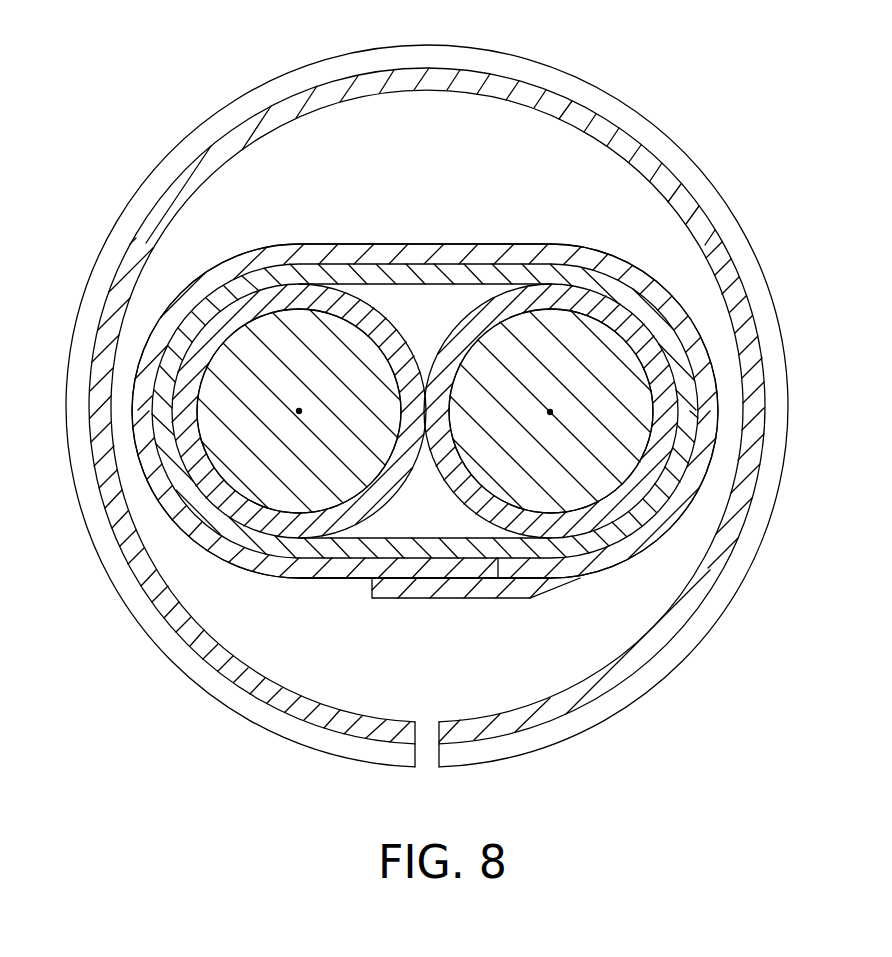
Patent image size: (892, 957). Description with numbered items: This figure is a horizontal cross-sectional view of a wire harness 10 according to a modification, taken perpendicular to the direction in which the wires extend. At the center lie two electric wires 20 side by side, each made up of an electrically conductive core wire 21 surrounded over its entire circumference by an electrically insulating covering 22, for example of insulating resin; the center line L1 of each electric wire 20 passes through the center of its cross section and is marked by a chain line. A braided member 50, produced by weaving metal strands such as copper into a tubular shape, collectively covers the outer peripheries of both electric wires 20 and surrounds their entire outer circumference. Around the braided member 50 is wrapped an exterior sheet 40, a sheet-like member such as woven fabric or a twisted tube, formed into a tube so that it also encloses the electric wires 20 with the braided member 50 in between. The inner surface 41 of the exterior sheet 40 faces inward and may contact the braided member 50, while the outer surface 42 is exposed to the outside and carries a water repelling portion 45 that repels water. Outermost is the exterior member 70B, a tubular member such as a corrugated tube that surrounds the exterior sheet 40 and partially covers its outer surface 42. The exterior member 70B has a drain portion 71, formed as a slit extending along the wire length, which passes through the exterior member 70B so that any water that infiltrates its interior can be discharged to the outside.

The wire harness 10 is at (694, 98).
The exterior member 70B is at (427, 425).
The drain portion 71 is at (426, 733).
The exterior sheet 40 is at (425, 380).
The inner surface 41 is at (412, 286).
The outer surface 42 is at (542, 248).
The braided member 50 is at (220, 297).
The water repelling portion 45 is at (262, 563).
The electric wire 20 is at (425, 371).
The core wire 21 is at (468, 447).
The insulating covering 22 is at (278, 290).
The center line L1 is at (299, 410).